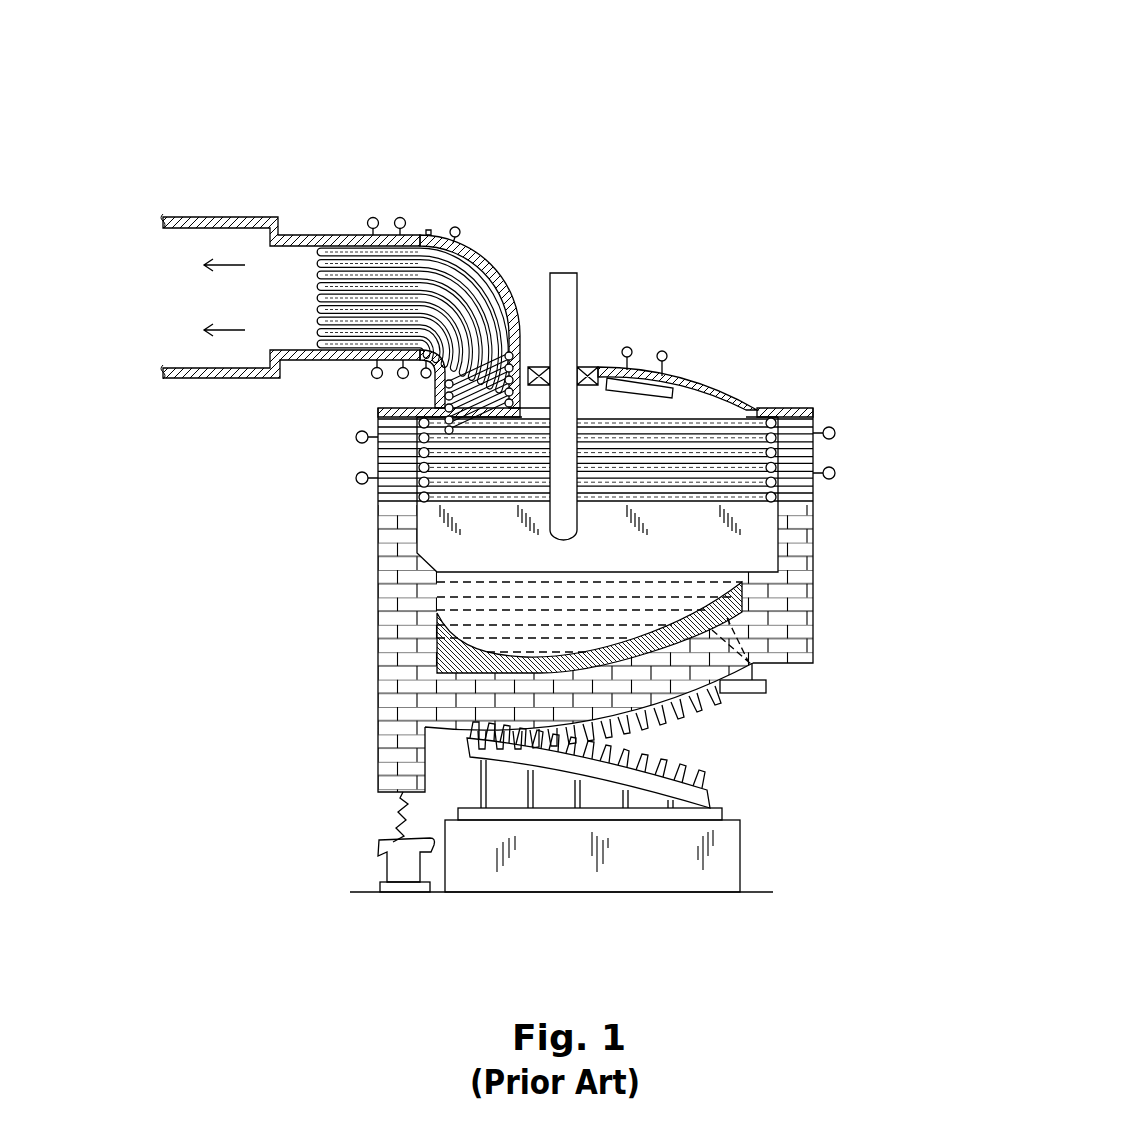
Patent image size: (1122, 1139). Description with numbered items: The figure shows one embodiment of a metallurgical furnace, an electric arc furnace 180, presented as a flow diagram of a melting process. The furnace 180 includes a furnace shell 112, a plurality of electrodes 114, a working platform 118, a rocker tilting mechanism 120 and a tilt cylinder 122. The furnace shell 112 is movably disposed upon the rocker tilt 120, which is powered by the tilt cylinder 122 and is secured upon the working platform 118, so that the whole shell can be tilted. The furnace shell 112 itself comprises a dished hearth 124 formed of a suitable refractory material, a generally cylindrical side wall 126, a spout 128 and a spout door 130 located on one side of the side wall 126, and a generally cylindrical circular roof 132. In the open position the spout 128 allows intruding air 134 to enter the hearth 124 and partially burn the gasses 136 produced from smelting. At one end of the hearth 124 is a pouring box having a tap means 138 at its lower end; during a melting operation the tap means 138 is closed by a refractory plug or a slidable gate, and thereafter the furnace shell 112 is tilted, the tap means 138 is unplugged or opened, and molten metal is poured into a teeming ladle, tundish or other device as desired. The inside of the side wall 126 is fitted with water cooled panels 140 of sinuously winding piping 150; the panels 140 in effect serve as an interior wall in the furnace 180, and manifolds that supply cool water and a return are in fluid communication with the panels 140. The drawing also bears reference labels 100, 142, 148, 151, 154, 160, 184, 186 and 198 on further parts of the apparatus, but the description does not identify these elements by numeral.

The refractory crucible 100 is at (430, 640).
The furnace shell 112 is at (815, 450).
The electrodes 114 is at (565, 272).
The working platform 118 is at (745, 860).
The rocker tilting mechanism 120 is at (720, 786).
The tilt cylinder 122 is at (392, 812).
The dished hearth 124 is at (400, 740).
The cylindrical side wall 126 is at (810, 462).
The spout 128 is at (377, 528).
The spout door 130 is at (385, 523).
The circular roof 132 is at (710, 376).
The intruding air 134 is at (377, 535).
The gasses 136 is at (207, 266).
The tap means 138 is at (766, 688).
The water cooled panels 140 is at (740, 462).
The baffle plate 142 is at (585, 377).
The exhaust duct 148 is at (185, 380).
The sinuously winding piping 150 is at (775, 500).
The lid connection 151 is at (645, 372).
The heat exchanger duct 154 is at (430, 230).
The curved tube section 160 is at (518, 318).
The EAF type furnace 180 is at (710, 124).
The temperature sensor 184 is at (835, 430).
The sensor port 186 is at (835, 474).
The molten material 198 is at (460, 597).